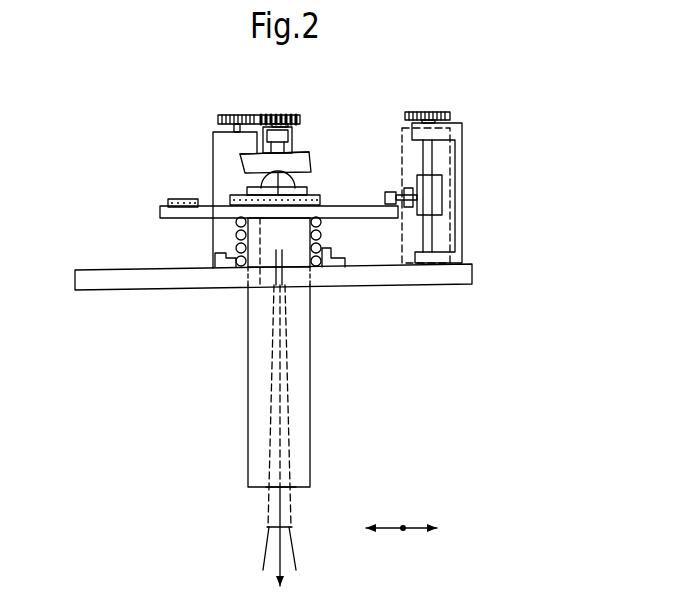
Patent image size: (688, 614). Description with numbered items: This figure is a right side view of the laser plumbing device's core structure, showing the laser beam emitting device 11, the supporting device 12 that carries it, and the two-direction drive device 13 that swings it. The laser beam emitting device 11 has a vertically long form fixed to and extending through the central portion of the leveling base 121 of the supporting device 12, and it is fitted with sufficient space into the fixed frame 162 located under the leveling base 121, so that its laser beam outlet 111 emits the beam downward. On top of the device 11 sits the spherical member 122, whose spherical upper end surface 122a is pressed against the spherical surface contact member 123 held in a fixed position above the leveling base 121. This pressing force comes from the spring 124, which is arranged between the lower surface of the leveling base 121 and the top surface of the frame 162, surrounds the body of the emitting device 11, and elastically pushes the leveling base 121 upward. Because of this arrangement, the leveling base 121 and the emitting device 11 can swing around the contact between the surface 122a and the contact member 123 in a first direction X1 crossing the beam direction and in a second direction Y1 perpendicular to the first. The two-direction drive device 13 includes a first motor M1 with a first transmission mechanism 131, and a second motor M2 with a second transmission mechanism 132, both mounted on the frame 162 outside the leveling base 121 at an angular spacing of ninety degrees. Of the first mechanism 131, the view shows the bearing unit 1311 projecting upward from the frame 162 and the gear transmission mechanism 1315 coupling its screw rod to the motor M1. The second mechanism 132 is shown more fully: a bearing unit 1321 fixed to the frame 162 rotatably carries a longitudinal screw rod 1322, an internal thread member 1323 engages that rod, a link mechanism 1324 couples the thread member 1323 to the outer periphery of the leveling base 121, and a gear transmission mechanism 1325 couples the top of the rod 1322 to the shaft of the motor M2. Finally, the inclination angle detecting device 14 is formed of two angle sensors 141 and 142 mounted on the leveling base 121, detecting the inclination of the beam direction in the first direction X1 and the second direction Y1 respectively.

The laser beam emitting device 11 is at (247, 394).
The laser beam outlet 111 is at (275, 488).
The supporting device 12 is at (159, 212).
The leveling base 121 is at (178, 219).
The spherical surface contact member 123 is at (242, 165).
The spring 124 is at (322, 235).
The two-direction drive device 13 is at (207, 113).
The first transmission mechanism 131 is at (278, 112).
The bearing unit 1311 is at (294, 133).
The gear transmission mechanism 1315 is at (240, 114).
The second transmission mechanism 132 is at (465, 210).
The bearing unit 1321 is at (458, 186).
The longitudinal screw rod 1322 is at (428, 150).
The internal thread member 1323 is at (426, 180).
The link mechanism 1324 is at (390, 191).
The gear transmission mechanism 1325 is at (431, 111).
The inclination angle detecting device 14 is at (164, 199).
The angle sensor 141 is at (176, 198).
The angle sensor 142 is at (321, 198).
The frame 162 is at (97, 289).
The spherical member 122 is at (313, 168).
The upper end surface 122a is at (293, 168).
The first motor M1 is at (211, 140).
The second motor M2 is at (453, 238).
The first direction X1 is at (402, 526).
The second direction Y1 is at (418, 532).